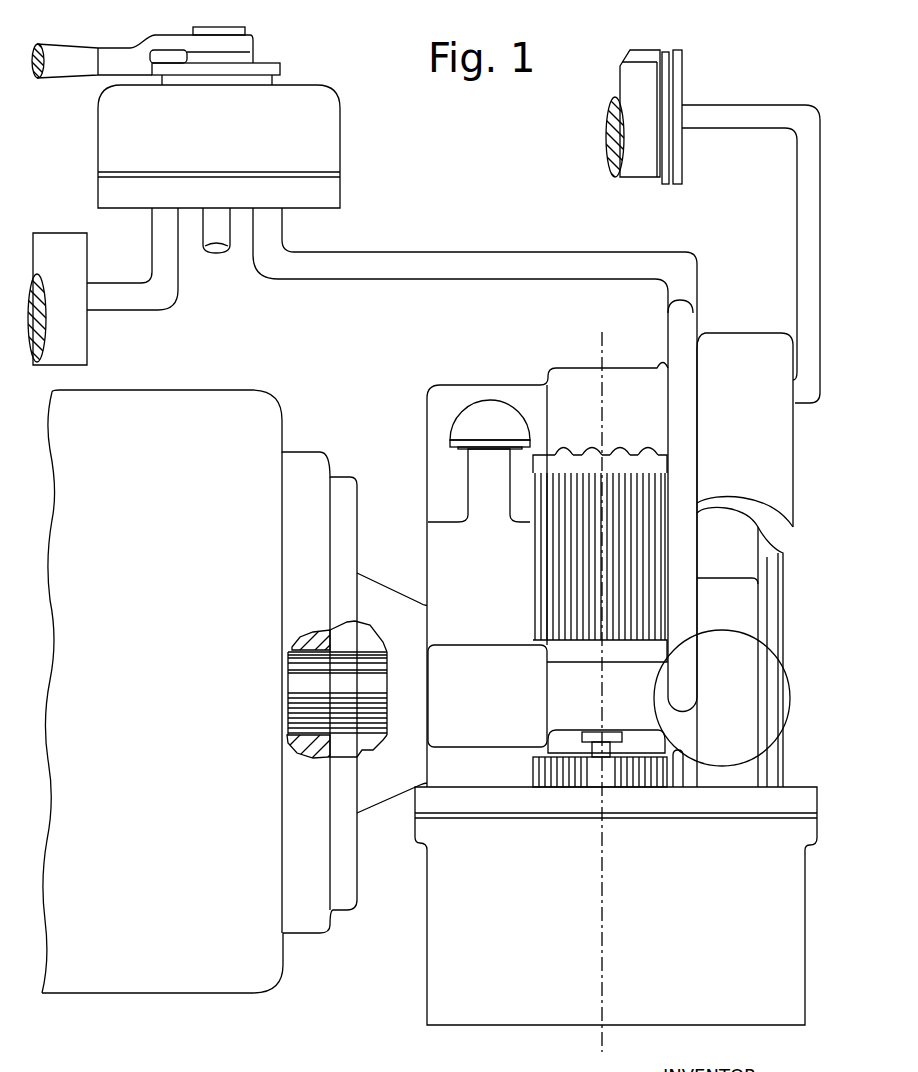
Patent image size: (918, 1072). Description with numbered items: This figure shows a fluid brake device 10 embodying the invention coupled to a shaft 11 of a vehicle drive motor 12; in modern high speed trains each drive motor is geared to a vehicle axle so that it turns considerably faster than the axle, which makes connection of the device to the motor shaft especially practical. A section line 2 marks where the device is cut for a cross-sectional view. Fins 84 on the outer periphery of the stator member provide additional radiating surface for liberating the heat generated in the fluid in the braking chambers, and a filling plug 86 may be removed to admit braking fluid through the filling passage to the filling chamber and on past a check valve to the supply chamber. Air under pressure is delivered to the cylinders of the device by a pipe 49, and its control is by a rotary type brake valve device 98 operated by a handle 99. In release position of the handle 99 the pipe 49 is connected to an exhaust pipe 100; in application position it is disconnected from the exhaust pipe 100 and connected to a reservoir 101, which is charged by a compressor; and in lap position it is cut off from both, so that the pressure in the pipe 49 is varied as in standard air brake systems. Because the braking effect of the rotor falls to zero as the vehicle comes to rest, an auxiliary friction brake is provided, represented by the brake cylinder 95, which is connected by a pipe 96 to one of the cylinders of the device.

The section line 2- 2 is at (602, 332).
The brake device 10 is at (442, 376).
The shaft 11 is at (365, 687).
The vehicle drive motor 12 is at (210, 400).
The pipe 49 is at (462, 263).
The fins 84 is at (647, 447).
The filling plug 86 is at (492, 410).
The brake cylinder 95 is at (648, 167).
The pipe 96 is at (803, 217).
The rotary type brake valve device 98 is at (340, 115).
The handle 99 is at (65, 70).
The exhaust pipe 100 is at (218, 253).
The reservoir 101 is at (53, 240).